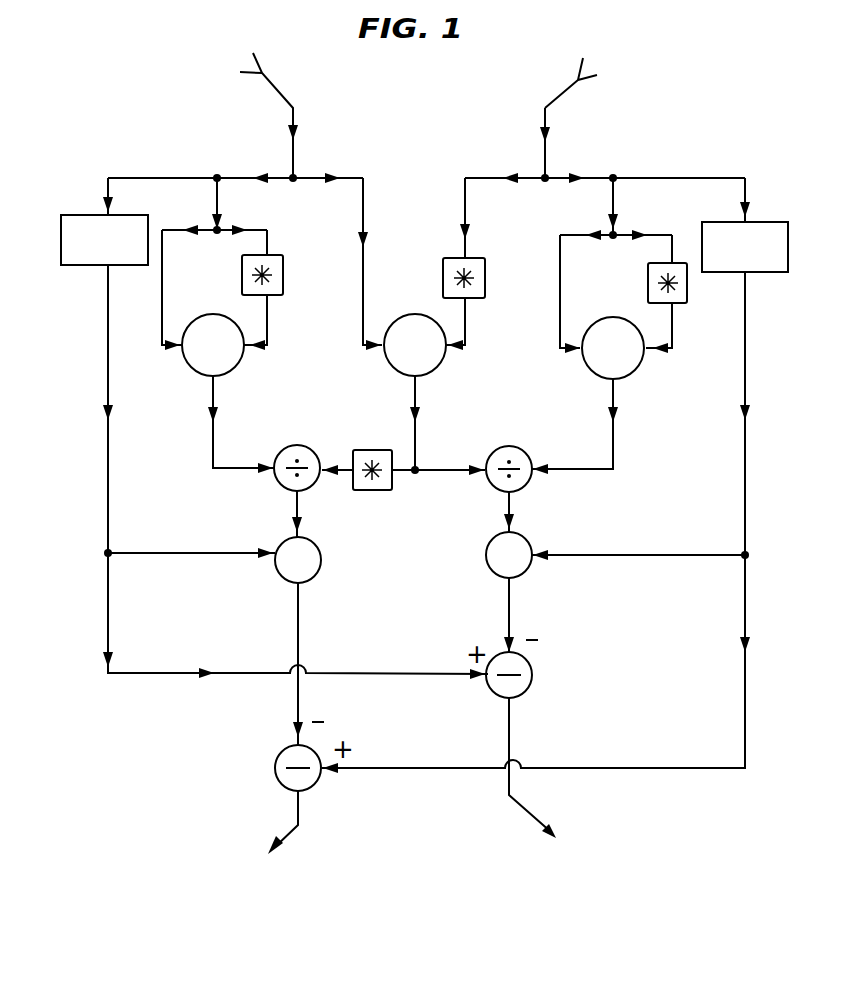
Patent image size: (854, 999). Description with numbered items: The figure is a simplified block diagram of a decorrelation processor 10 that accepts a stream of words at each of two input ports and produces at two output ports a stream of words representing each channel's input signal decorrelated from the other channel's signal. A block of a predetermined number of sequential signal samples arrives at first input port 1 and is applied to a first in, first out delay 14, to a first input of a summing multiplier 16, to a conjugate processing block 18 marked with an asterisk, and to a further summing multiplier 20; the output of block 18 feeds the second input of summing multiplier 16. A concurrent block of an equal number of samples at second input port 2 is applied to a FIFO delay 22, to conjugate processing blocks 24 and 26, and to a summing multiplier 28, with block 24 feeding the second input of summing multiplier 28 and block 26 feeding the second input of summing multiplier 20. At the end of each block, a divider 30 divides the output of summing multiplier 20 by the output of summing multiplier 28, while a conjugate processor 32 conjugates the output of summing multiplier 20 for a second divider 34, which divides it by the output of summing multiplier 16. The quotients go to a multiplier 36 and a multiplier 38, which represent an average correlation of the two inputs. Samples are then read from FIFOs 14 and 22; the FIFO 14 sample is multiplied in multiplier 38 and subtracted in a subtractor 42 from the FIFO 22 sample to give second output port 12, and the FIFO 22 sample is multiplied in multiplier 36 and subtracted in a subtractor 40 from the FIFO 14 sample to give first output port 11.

The first input port 1 is at (269, 111).
The second input port 2 is at (568, 111).
The decorrelation processor 10 is at (420, 831).
The first output port 11 is at (544, 778).
The second output port 12 is at (274, 837).
The first in, first out (FIFO) delay 14 is at (110, 266).
The summing multiplier 16 is at (200, 373).
The conjugate processing block 18 is at (242, 275).
The further summing multiplier 20 is at (395, 375).
The FIFO delay 22 is at (727, 272).
The conjugate signal processing block 24 is at (648, 283).
The conjugate signal processing block 26 is at (443, 278).
The summing multiplier 28 is at (595, 374).
The divider 30 is at (525, 486).
The conjugate processor 32 is at (356, 490).
The second divider 34 is at (282, 447).
The multiplier 36 is at (486, 553).
The multiplier 38 is at (318, 567).
The subtractor 40 is at (500, 697).
The subtractor 42 is at (275, 768).